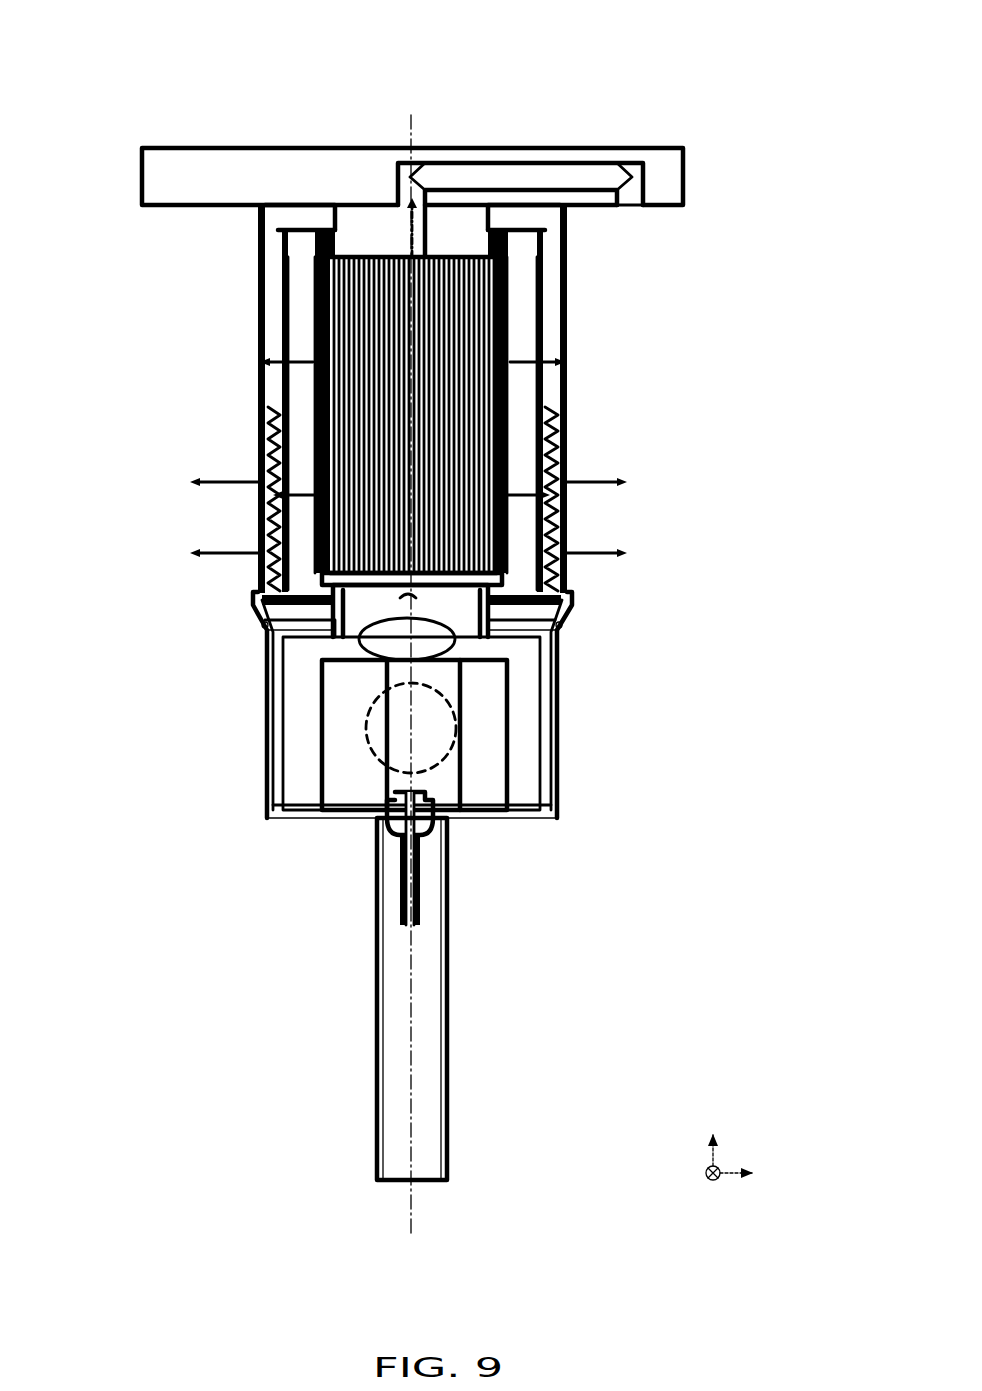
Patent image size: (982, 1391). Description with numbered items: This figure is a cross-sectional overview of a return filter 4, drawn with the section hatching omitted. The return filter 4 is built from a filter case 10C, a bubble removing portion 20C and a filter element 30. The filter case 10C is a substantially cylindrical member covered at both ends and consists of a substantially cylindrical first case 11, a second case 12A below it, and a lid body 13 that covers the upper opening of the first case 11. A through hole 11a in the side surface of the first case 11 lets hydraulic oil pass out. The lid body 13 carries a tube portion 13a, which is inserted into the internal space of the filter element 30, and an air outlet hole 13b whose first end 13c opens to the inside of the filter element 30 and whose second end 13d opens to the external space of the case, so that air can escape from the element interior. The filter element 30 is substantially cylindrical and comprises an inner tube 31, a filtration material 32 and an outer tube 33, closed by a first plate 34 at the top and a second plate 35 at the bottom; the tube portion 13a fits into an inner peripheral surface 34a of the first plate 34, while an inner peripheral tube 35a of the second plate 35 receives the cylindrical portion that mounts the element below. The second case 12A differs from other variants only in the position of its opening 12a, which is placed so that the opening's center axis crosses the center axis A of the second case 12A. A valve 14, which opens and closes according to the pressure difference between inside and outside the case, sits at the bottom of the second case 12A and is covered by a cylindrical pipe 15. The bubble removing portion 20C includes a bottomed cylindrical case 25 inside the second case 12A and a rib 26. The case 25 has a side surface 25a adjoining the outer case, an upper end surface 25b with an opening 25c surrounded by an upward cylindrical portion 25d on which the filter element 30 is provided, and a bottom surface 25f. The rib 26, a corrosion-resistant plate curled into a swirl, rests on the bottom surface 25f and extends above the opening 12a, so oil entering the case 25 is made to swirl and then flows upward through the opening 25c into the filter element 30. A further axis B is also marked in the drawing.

The return filter 4 is at (760, 32).
The lid body 13 is at (683, 148).
The tube portion 13a is at (366, 242).
The air outlet hole 13b is at (466, 172).
The first end 13c is at (422, 257).
The second end 13d is at (630, 208).
The filter case 10C is at (735, 390).
The first case 11 is at (567, 390).
The through hole 11a is at (567, 450).
The filter element 30 is at (102, 454).
The inner tube 31 is at (350, 412).
The filtration material 32 is at (303, 368).
The outer tube 33 is at (268, 348).
The first plate 34 is at (285, 240).
The inner peripheral surface 34a is at (315, 286).
The second plate 35 is at (258, 600).
The inner peripheral tube 35a is at (303, 560).
The second case 12A is at (560, 613).
The opening 12a is at (563, 627).
The bubble removing portion 20C is at (740, 933).
The case 25 is at (657, 846).
The side surface 25a is at (547, 730).
The opening 25c is at (463, 607).
The bottom surface 25f is at (520, 818).
The cylindrical portion 25d is at (437, 777).
The upper end surface 25b is at (300, 633).
The rib 26 is at (470, 697).
The valve 14 is at (378, 822).
The cylindrical pipe 15 is at (377, 905).
The center axis A is at (411, 988).
The tilt axis B is at (410, 597).